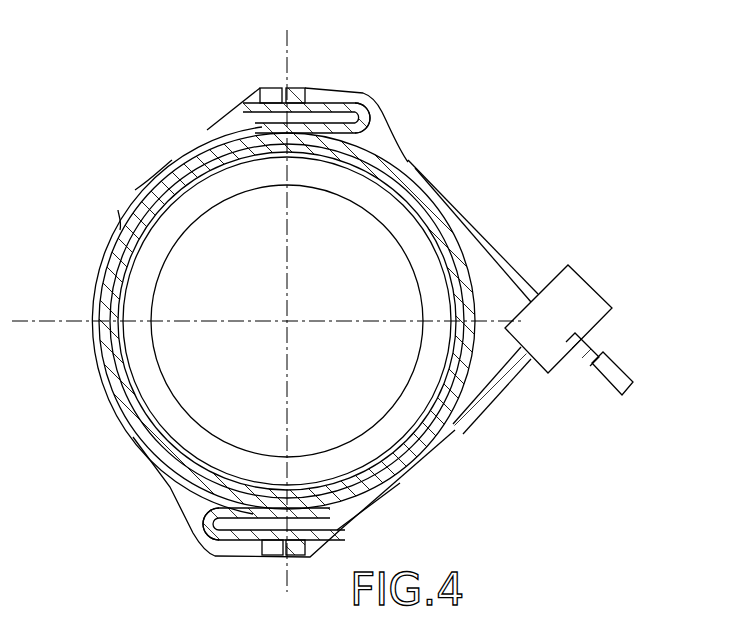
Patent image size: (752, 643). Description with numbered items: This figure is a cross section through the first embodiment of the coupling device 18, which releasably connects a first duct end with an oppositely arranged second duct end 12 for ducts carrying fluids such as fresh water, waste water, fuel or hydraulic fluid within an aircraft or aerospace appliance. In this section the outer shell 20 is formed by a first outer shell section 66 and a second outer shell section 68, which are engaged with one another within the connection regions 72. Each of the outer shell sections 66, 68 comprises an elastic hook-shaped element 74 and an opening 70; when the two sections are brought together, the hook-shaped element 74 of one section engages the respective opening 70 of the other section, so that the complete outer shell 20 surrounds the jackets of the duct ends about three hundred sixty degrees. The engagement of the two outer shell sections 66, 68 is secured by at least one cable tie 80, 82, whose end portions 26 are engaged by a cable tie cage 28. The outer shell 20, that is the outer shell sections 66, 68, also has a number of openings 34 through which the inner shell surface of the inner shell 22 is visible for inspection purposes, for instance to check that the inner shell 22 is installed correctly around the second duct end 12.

The second duct end 12 is at (150, 374).
The coupling device 18 is at (473, 167).
The outer shell 20 is at (153, 163).
The inner shell 22 is at (118, 228).
The end portions 26 is at (630, 362).
The cable tie cage 28 is at (583, 284).
The openings 34 is at (128, 210).
The first outer shell section 66 is at (135, 190).
The second outer shell section 68 is at (428, 480).
The opening 70 is at (252, 132).
The connection regions 72 is at (260, 98).
The hook-shaped element 74 is at (366, 109).
The cable tie 80 is at (502, 243).
The cable tie 82 is at (518, 382).